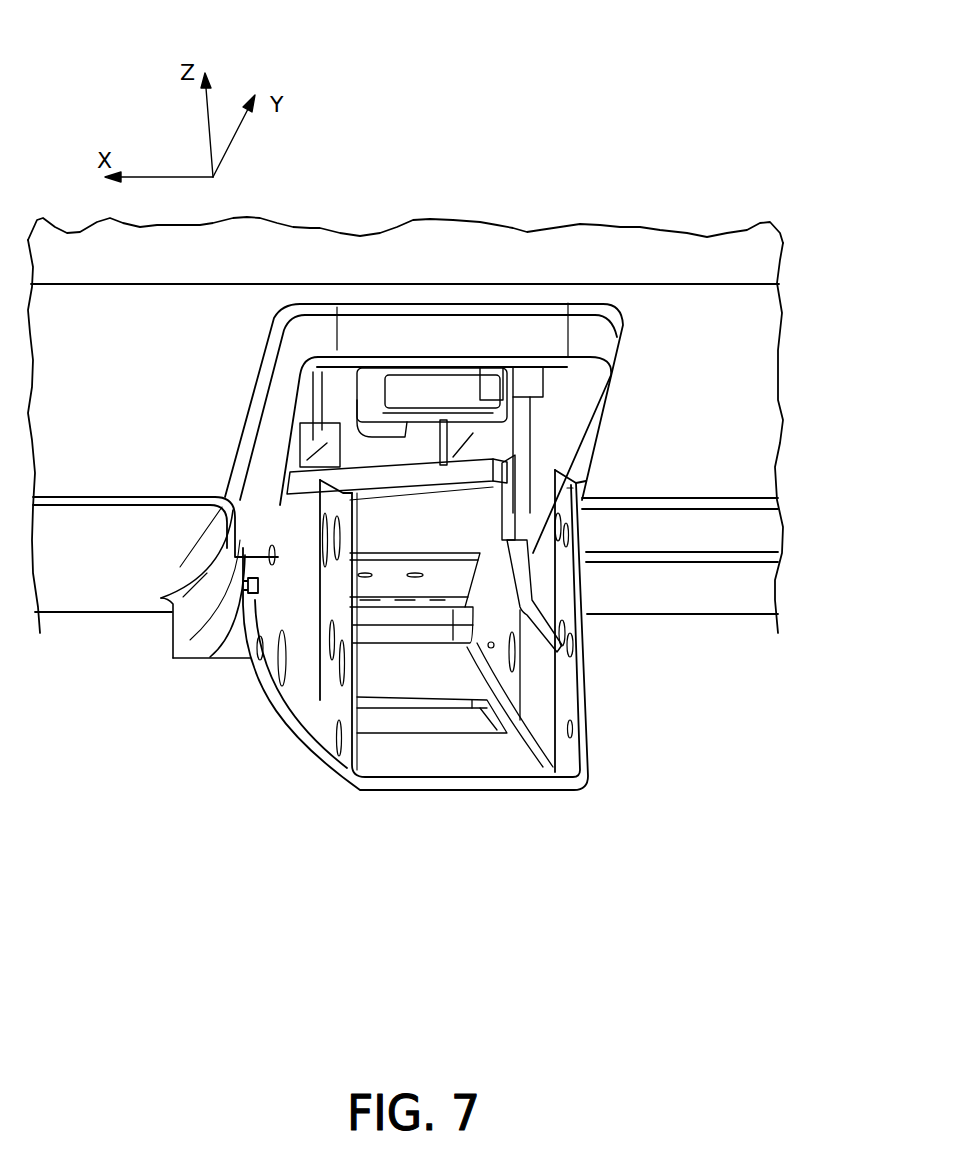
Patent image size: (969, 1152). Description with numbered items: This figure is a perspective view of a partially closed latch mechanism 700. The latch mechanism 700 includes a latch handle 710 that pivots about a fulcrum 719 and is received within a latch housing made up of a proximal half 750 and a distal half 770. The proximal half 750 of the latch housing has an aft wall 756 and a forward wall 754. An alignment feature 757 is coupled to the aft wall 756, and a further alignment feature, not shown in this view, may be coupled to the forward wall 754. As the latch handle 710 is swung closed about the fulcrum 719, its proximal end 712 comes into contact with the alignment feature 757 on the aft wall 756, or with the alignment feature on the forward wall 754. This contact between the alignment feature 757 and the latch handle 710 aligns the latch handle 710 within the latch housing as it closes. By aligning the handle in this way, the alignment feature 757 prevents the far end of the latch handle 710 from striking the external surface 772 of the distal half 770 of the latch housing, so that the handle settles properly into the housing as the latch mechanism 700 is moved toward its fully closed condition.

The latch mechanism 700 is at (669, 100).
The distal half of the latch housing 770 is at (682, 452).
The proximal half of the latch housing 750 is at (142, 657).
The forward wall 754 is at (197, 585).
The latch handle 710 is at (302, 742).
The fulcrum 719 is at (421, 331).
The external surface 772 is at (580, 460).
The alignment feature 757 is at (520, 483).
The proximal end 712 is at (540, 580).
The aft wall 756 is at (563, 547).